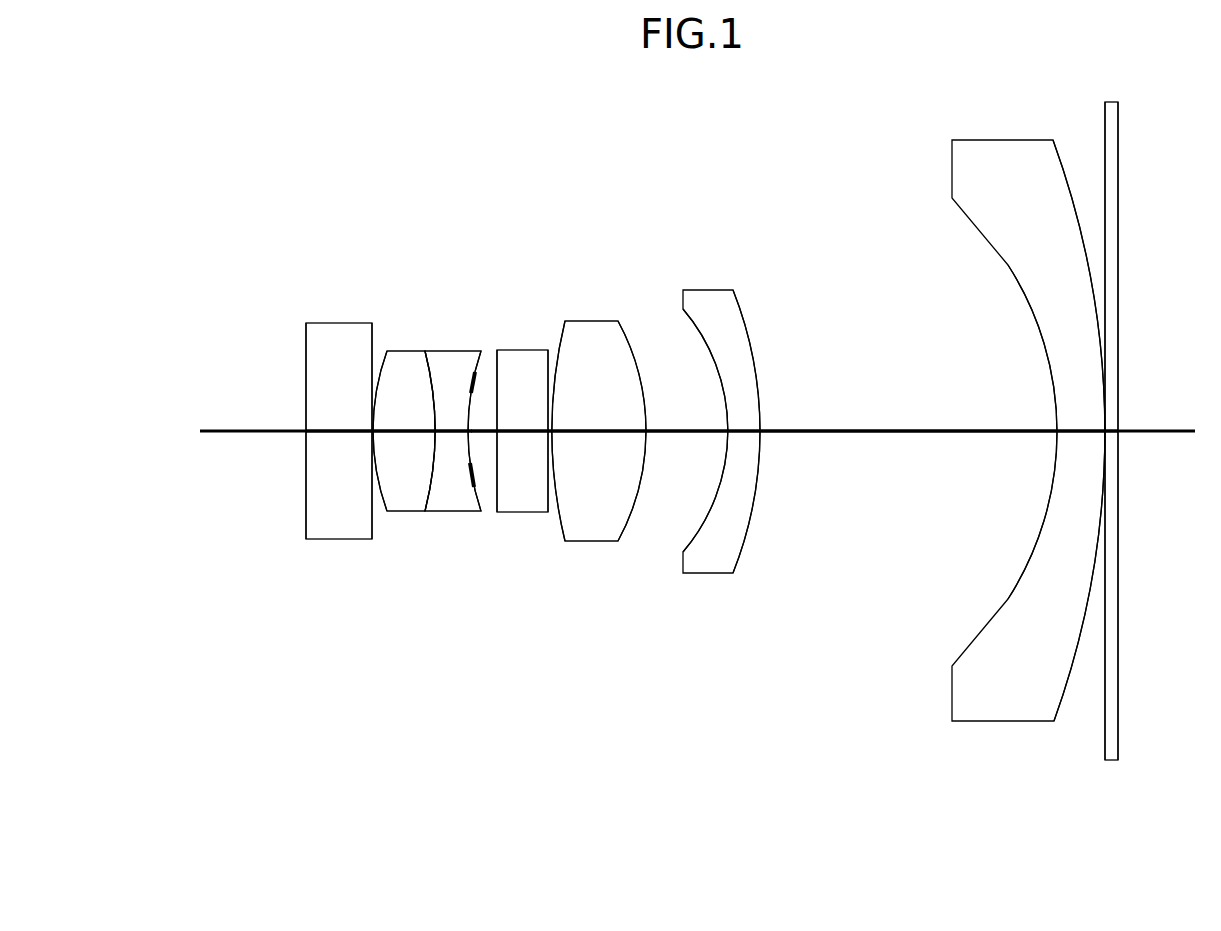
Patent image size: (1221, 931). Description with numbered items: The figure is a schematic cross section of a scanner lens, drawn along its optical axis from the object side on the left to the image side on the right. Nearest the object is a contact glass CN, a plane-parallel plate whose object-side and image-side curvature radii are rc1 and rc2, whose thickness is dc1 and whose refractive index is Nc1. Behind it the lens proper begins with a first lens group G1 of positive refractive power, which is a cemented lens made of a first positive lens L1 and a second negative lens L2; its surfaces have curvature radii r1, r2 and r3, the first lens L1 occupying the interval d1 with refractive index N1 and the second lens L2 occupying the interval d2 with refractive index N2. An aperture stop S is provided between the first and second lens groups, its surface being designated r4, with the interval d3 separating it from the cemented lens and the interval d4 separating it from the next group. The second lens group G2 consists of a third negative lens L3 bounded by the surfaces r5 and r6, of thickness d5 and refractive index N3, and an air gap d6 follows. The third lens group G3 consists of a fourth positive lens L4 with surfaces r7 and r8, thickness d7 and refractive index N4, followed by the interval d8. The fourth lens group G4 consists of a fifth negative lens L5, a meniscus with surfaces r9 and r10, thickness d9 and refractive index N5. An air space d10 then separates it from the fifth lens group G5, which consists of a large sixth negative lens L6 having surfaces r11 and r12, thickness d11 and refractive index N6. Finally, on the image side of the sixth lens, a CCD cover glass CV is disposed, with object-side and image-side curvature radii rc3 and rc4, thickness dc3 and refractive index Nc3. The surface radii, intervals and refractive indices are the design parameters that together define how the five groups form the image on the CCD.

The contact glass CN is at (322, 335).
The curvature radius of object side of contact glass rc1 is at (306, 357).
The curvature radius of image side of contact glass rc2 is at (376, 328).
The thickness of contact glass dc1 is at (339, 417).
The refractive index of contact glass Nc1 is at (322, 527).
The first lens group G1 is at (473, 220).
The first positive lens L1 is at (405, 365).
The curvature radius of first lens surface r1 is at (386, 362).
The curvature radius of second lens surface r2 is at (428, 362).
The first interval between lens surfaces d1 is at (404, 417).
The refractive index of first interval lens material N1 is at (412, 498).
The second negative lens L2 is at (456, 365).
The curvature radius of third lens surface r3 is at (477, 362).
The second interval between lens surfaces d2 is at (451, 417).
The refractive index of second interval lens material N2 is at (452, 493).
The aperture stop S is at (480, 372).
The curvature radius of fourth lens surface r4 is at (481, 399).
The third interval between lens surfaces d3 is at (474, 488).
The fourth interval between lens surfaces d4 is at (494, 438).
The second lens group G2 is at (522, 215).
The third negative lens L3 is at (523, 365).
The curvature radius of fifth lens surface r5 is at (498, 362).
The curvature radius of sixth lens surface r6 is at (547, 362).
The fifth interval between lens surfaces d5 is at (522, 417).
The refractive index of third interval lens material N3 is at (532, 500).
The sixth interval between lens surfaces d6 is at (553, 445).
The third lens group G3 is at (585, 213).
The fourth positive lens L4 is at (593, 330).
The curvature radius of seventh lens surface r7 is at (558, 338).
The curvature radius of eighth lens surface r8 is at (642, 383).
The seventh interval between lens surfaces d7 is at (599, 417).
The refractive index of fourth interval lens material N4 is at (600, 518).
The eighth interval between lens surfaces d8 is at (687, 417).
The fourth lens group G4 is at (700, 195).
The fifth negative lens L5 is at (712, 295).
The curvature radius of ninth lens surface r9 is at (708, 350).
The curvature radius of tenth lens surface r10 is at (748, 333).
The ninth interval between lens surfaces d9 is at (743, 417).
The refractive index of fifth interval lens material N5 is at (717, 550).
The air space between fifth and sixth lenses d10 is at (907, 417).
The fifth lens group G5 is at (1025, 55).
The sixth negative lens L6 is at (1031, 152).
The curvature radius of eleventh lens surface r11 is at (1009, 266).
The curvature radius of twelfth lens surface r12 is at (1092, 251).
The eleventh interval between lens surfaces d11 is at (1081, 417).
The refractive index of sixth interval lens material N6 is at (960, 695).
The CCD cover glass CV is at (1113, 112).
The curvature radius of object side of CCD cover glass rc3 is at (1104, 175).
The curvature radius of image side of CCD cover glass rc4 is at (1120, 178).
The thickness of CCD cover glass dc3 is at (1113, 431).
The refractive index of CCD cover glass Nc3 is at (1110, 735).